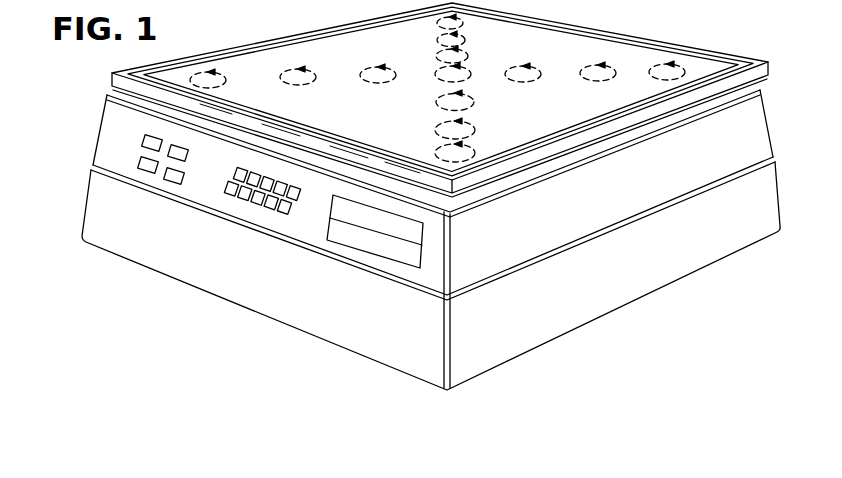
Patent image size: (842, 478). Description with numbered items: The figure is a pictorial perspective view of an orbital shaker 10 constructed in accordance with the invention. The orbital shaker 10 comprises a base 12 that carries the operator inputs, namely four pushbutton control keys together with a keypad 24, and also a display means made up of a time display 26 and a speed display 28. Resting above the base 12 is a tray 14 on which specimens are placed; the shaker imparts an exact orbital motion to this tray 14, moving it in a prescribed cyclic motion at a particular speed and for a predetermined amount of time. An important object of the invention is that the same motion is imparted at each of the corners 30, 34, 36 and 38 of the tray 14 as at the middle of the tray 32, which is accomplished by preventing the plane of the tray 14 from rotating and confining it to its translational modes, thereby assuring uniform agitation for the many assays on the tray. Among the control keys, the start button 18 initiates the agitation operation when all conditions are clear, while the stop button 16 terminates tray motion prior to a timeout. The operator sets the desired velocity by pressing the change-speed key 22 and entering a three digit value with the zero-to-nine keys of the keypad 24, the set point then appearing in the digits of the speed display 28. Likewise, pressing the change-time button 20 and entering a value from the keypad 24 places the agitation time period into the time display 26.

The orbital shaker 10 is at (188, 304).
The base 12 is at (676, 283).
The tray 14 is at (674, 47).
The stop button 16 is at (143, 167).
The start button 18 is at (142, 142).
The change-time button 20 is at (175, 179).
The change-speed key 22 is at (190, 153).
The keypad 24 is at (266, 214).
The time display 26 is at (423, 237).
The speed display 28 is at (423, 257).
The corner of the tray 30 is at (461, 22).
The middle of the tray 32 is at (433, 79).
The corner of the tray 34 is at (474, 157).
The corner of the tray 36 is at (688, 73).
The corner of the tray 38 is at (232, 97).